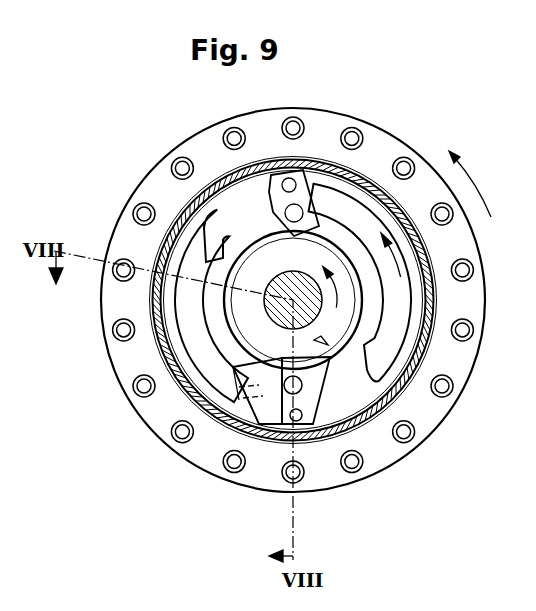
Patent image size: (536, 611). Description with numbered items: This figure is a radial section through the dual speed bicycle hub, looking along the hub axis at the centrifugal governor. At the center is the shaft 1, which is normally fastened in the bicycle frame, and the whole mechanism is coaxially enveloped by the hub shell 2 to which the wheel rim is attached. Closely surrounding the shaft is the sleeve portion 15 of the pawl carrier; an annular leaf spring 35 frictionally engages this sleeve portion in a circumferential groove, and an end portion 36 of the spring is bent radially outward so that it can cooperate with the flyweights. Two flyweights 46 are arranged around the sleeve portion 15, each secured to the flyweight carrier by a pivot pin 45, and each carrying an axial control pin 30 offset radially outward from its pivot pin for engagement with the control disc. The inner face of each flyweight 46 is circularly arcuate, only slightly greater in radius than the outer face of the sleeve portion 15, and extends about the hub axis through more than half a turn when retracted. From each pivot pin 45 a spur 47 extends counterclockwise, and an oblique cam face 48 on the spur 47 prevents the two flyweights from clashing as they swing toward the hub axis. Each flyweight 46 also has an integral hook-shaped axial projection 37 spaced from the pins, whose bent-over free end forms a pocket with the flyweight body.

The shaft 1 is at (261, 285).
The hub shell 2 is at (176, 197).
The sleeve portion of pawl carrier 15 is at (252, 271).
The control pin 30 is at (300, 427).
The annular leaf spring 35 is at (240, 360).
The end portion of spring 36 is at (228, 366).
The axial projection 37 is at (318, 210).
The pivot pin 45 is at (283, 405).
The flyweight 46 is at (363, 220).
The spur 47 is at (328, 378).
The oblique cam face 48 is at (330, 350).